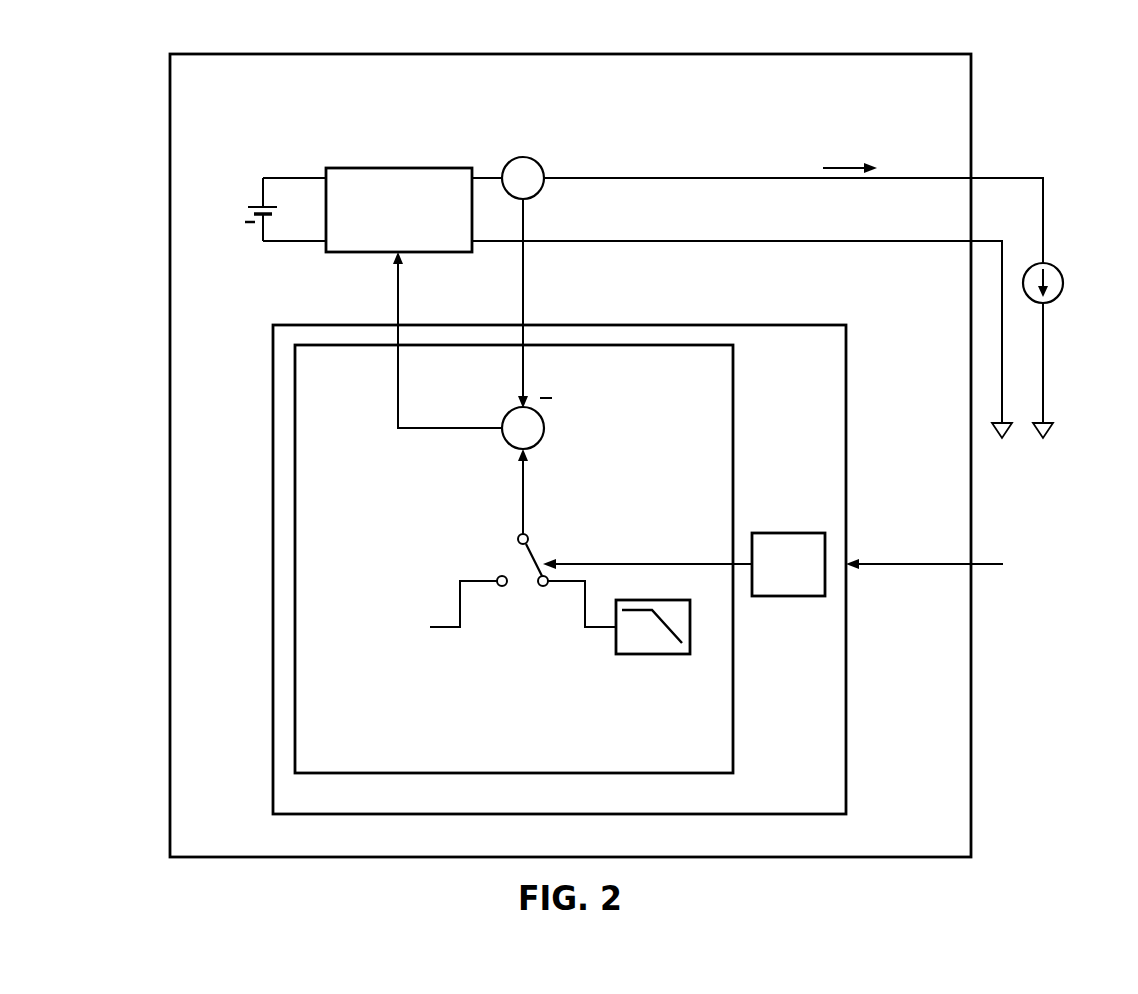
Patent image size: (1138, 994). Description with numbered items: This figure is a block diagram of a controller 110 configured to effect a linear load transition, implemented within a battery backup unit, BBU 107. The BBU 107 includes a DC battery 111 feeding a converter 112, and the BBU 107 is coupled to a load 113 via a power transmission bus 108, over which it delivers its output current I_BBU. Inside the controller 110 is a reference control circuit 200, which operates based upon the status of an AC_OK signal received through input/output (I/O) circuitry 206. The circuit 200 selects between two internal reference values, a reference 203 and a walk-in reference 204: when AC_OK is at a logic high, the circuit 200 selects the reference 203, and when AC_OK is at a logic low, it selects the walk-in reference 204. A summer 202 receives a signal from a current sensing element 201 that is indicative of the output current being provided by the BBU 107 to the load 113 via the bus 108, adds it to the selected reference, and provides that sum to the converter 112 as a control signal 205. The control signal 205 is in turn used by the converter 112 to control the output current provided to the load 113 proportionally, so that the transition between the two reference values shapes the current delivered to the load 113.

The BBU 107 is at (168, 710).
The power transmission bus 108 is at (752, 177).
The controller 110 is at (272, 638).
The DC battery 111 is at (256, 214).
The converter 112 is at (378, 168).
The load 113 is at (1064, 283).
The reference control circuit 200 is at (736, 398).
The current sensing element 201 is at (506, 164).
The summer 202 is at (506, 446).
The reference 203 is at (442, 628).
The walk-in reference 204 is at (652, 654).
The control signal 205 is at (399, 296).
The input/output (I/O) circuitry 206 is at (790, 596).